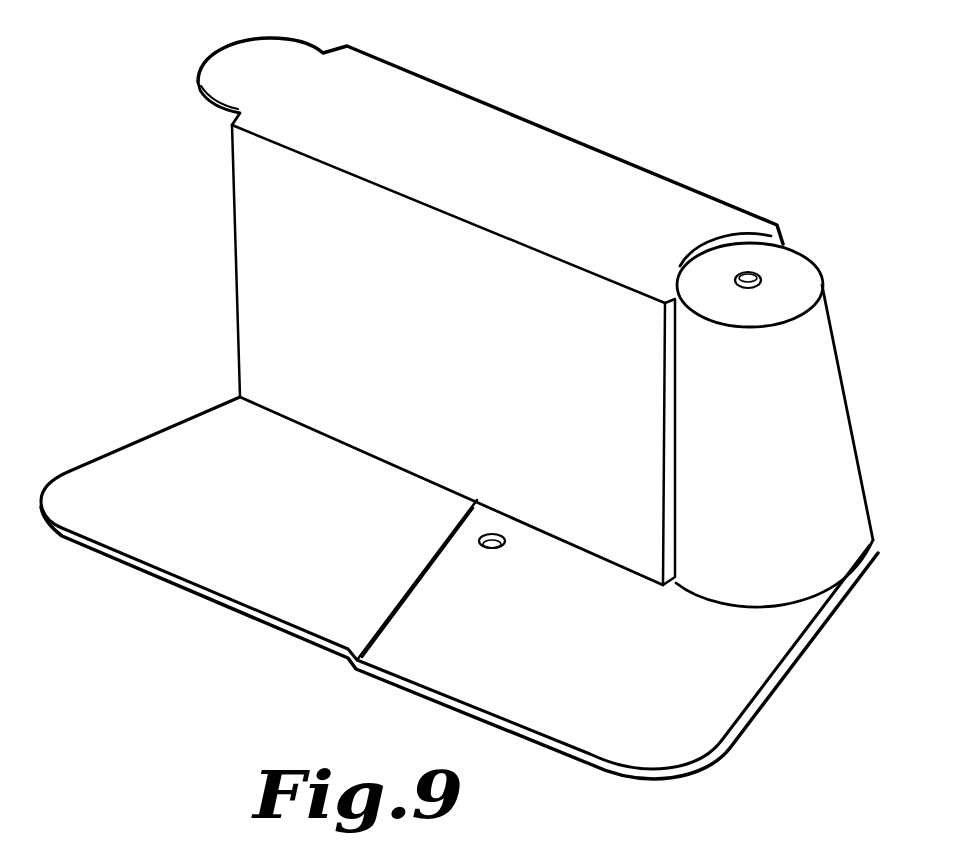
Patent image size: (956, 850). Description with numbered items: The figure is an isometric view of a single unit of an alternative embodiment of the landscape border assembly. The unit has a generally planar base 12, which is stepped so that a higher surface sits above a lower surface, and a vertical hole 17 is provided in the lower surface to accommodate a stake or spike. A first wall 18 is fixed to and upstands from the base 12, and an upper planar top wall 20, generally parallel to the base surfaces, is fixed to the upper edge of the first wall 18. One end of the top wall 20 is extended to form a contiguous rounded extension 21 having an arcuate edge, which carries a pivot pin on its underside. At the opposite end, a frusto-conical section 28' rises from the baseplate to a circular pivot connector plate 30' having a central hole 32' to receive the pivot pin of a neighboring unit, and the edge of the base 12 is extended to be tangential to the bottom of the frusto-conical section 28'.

The base 12 is at (97, 548).
The vertical hole 17 is at (492, 549).
The first wall 18 is at (472, 356).
The top wall 20 is at (524, 182).
The rounded extension 21 is at (203, 99).
The frusto-conical section 28' is at (774, 420).
The pivot connector plate 30' is at (750, 285).
The central hole 32' is at (739, 327).